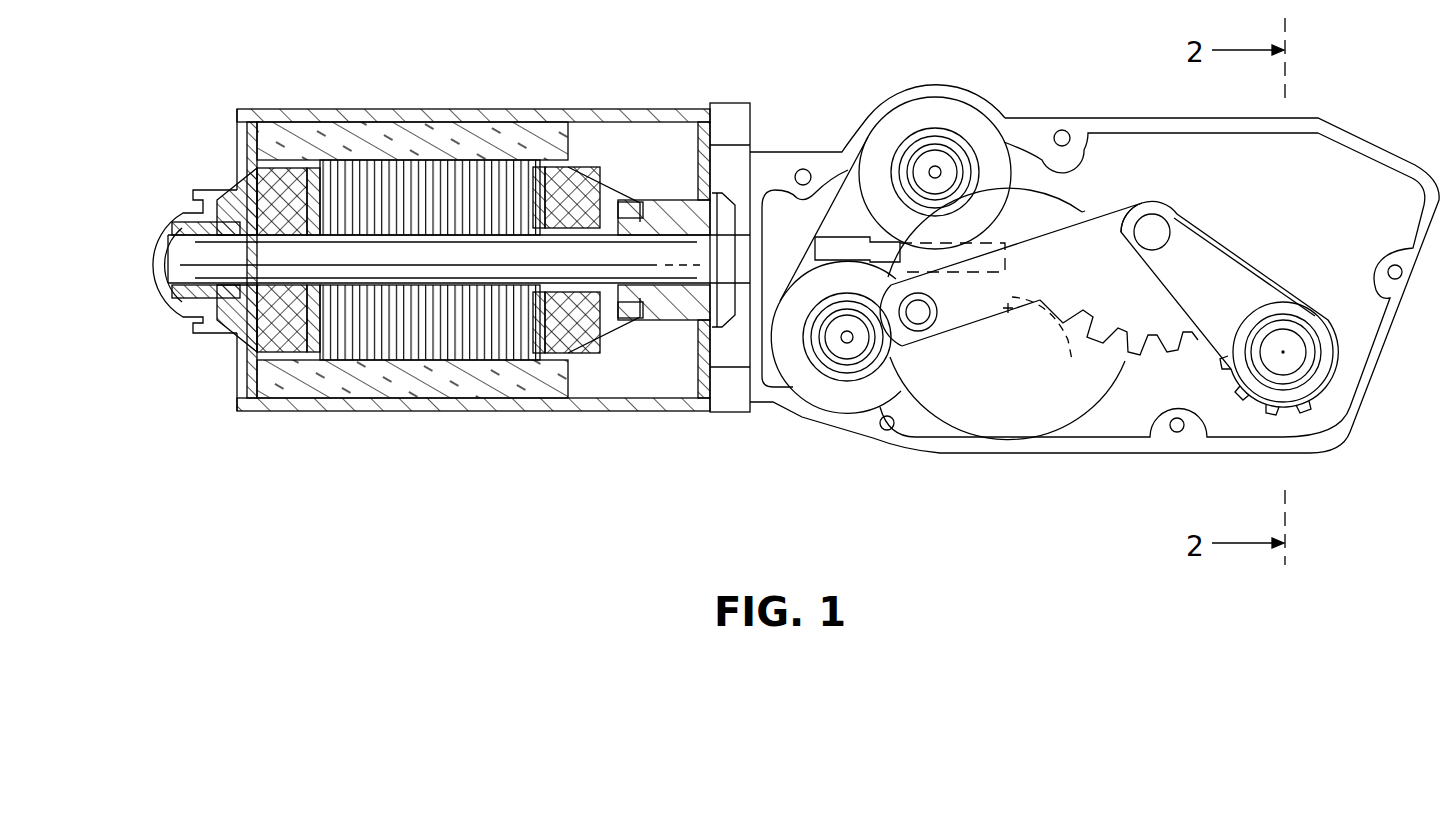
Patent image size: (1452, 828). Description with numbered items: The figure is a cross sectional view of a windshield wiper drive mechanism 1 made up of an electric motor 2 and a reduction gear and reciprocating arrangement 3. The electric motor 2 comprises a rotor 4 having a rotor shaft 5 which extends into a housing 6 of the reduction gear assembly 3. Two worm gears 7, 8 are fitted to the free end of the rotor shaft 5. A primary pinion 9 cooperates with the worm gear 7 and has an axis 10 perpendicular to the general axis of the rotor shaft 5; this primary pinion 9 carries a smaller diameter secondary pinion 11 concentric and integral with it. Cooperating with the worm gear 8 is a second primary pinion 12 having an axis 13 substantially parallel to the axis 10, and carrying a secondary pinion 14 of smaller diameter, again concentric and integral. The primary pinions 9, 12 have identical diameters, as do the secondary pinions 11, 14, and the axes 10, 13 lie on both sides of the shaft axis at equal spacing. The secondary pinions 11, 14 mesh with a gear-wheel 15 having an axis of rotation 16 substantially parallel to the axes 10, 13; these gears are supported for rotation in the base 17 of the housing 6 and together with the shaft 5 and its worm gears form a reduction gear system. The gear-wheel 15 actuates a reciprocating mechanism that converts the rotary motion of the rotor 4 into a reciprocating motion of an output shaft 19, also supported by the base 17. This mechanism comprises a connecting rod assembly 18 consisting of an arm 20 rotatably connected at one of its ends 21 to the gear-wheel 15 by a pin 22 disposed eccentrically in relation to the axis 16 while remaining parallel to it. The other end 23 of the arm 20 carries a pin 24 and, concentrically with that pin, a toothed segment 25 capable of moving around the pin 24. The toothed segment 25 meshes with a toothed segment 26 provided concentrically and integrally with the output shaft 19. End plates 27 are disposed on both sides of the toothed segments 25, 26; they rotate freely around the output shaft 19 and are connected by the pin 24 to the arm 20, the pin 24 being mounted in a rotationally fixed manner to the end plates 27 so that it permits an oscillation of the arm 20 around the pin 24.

The windshield wiper drive mechanism 1 is at (1338, 72).
The electric motor 2 is at (456, 82).
The reduction gear and reciprocating arrangement 3 is at (1378, 427).
The rotor 4 is at (388, 180).
The rotor shaft 5 is at (670, 264).
The housing 6 is at (1402, 160).
The worm gear 7 is at (837, 240).
The worm gear 8 is at (988, 250).
The primary pinion 9 is at (803, 387).
The axis 10 is at (842, 343).
The secondary pinion 11 is at (857, 383).
The primary pinion 12 is at (907, 243).
The axis 13 is at (937, 168).
The secondary pinion 14 is at (921, 128).
The gear-wheel 15 is at (1003, 427).
The axis of rotation 16 is at (1046, 339).
The base 17 is at (1206, 189).
The connecting rod assembly 18 is at (1250, 228).
The output shaft 19 is at (1297, 360).
The arm 20 is at (1083, 215).
The end 21 is at (910, 352).
The pin 22 is at (937, 322).
The end 23 is at (1153, 214).
The pin 24 is at (1160, 201).
The toothed segment 25 is at (1148, 371).
The toothed segment 26 is at (1246, 424).
The end plates 27 is at (1186, 293).